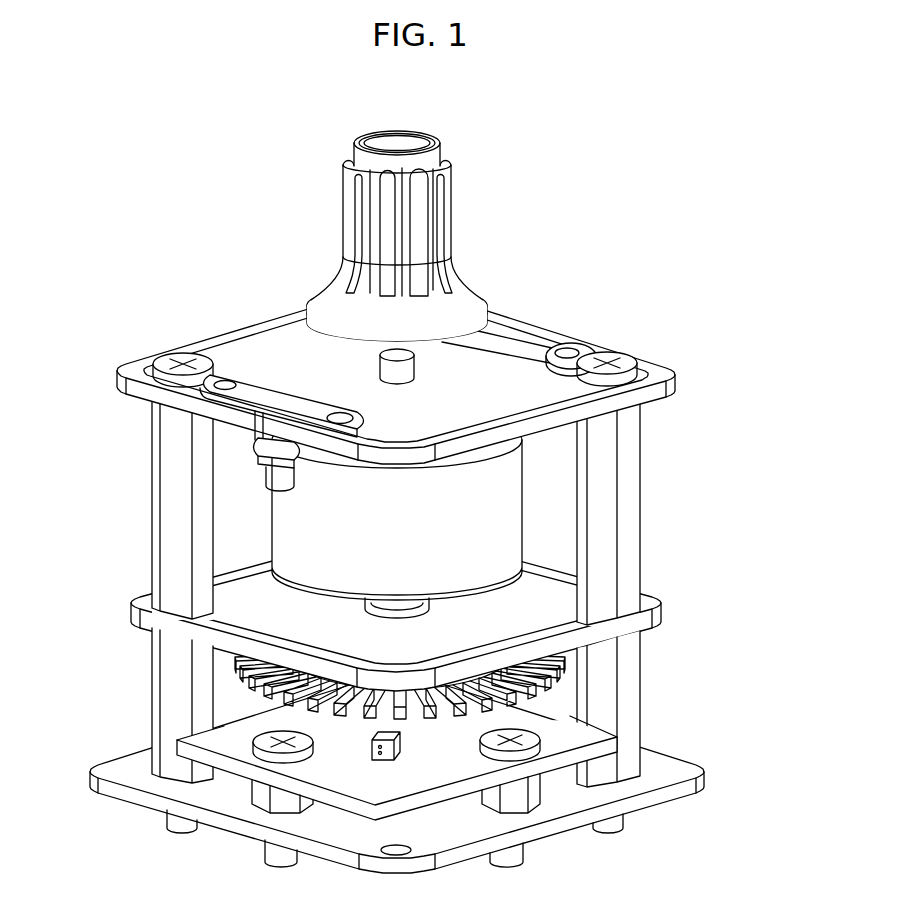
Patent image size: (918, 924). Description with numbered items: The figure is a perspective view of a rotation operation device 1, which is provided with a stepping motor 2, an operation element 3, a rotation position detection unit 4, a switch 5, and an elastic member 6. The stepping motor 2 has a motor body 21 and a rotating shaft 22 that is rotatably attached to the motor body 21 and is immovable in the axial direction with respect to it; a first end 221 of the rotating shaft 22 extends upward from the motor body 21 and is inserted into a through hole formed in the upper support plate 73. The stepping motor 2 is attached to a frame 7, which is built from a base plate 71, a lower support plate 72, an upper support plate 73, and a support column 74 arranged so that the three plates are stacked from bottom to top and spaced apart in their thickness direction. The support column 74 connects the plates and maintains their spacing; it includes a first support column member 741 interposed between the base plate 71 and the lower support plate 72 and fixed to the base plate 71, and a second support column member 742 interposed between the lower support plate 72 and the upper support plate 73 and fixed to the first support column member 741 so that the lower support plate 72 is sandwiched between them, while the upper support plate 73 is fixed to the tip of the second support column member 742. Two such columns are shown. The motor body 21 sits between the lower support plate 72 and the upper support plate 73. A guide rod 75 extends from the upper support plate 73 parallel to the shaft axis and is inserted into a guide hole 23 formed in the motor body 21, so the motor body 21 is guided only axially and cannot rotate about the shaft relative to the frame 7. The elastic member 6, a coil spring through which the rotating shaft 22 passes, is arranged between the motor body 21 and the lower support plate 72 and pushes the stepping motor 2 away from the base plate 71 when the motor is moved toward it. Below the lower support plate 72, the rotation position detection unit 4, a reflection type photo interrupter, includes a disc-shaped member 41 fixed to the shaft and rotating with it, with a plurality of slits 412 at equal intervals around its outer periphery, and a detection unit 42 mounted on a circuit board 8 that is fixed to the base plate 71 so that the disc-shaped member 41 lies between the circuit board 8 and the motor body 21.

The rotation operation device 1 is at (194, 232).
The stepping motor 2 is at (402, 550).
The motor body 21 is at (515, 483).
The rotating shaft 22 is at (526, 311).
The first end 221 is at (462, 338).
The guide hole 23 is at (279, 442).
The operation element 3 is at (450, 186).
The rotation position detection unit 4 is at (401, 789).
The disc-shaped member 41 is at (566, 687).
The slits 412 is at (469, 730).
The detection unit 42 is at (388, 752).
The switch 5 is at (358, 718).
The elastic member 6 is at (428, 608).
The frame 7 is at (413, 351).
The base plate 71 is at (579, 818).
The lower support plate 72 is at (562, 566).
The upper support plate 73 is at (607, 340).
The support column 74 is at (398, 591).
The first support column member 741 is at (176, 664).
The second support column member 742 is at (176, 568).
The guide rod 75 is at (217, 370).
The circuit board 8 is at (381, 820).